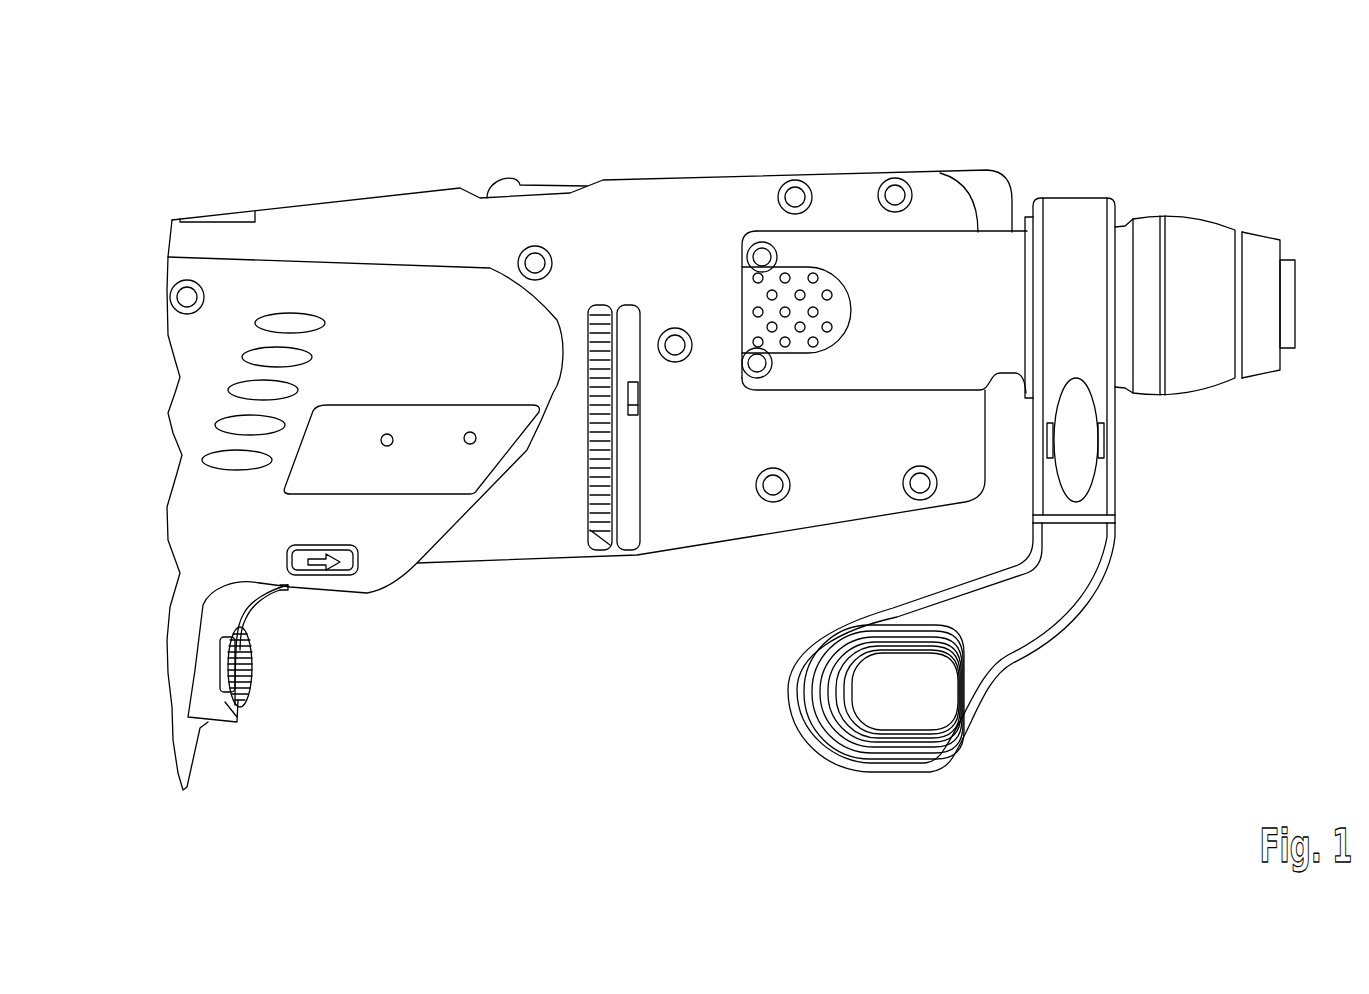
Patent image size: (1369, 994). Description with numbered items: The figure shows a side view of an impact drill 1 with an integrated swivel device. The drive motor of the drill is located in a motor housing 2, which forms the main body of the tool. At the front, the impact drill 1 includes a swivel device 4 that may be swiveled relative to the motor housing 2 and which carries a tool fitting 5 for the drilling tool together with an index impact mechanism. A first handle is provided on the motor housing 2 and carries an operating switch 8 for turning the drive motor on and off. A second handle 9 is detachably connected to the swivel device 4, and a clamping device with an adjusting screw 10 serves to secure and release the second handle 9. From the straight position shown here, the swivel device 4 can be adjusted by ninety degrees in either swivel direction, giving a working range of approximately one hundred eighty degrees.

The impact drill 1 is at (205, 189).
The motor housing 2 is at (605, 200).
The swivel device 4 is at (940, 247).
The tool fitting 5 is at (1287, 302).
The operating switch 8 is at (250, 670).
The second handle 9 is at (1072, 217).
The adjusting screw 10 is at (1078, 478).